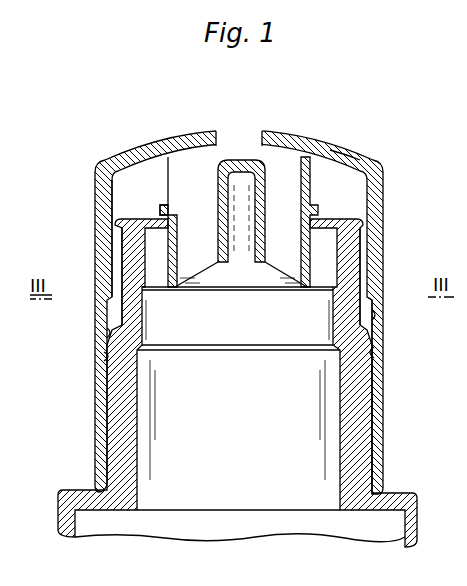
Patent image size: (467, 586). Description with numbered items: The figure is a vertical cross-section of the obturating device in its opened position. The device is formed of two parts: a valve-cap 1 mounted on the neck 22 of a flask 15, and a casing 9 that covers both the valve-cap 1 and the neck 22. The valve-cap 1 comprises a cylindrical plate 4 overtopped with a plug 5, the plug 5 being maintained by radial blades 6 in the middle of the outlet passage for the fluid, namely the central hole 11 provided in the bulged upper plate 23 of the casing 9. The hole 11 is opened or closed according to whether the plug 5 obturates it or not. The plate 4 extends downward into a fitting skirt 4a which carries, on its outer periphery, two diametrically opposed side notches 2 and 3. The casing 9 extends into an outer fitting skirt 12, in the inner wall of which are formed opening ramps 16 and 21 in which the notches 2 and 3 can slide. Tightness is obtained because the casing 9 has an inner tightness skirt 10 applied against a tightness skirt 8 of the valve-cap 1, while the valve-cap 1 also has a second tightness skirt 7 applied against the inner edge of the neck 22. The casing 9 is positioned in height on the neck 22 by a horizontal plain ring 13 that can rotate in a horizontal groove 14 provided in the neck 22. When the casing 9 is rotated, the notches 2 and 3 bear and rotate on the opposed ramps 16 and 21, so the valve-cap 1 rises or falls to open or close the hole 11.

The valve-cap 1 is at (97, 222).
The side notch 2 is at (372, 303).
The side notch 3 is at (100, 292).
The cylindrical plate 4 is at (370, 198).
The fitting skirt 4a is at (112, 250).
The plug 5 is at (308, 172).
The radial blades 6 is at (282, 266).
The second tightness skirt 7 is at (153, 212).
The tightness skirt 8 is at (162, 208).
The casing 9 is at (347, 155).
The inner tightness skirt 10 is at (316, 163).
The central hole 11 is at (243, 143).
The outer fitting skirt 12 is at (378, 412).
The horizontal plain ring 13 is at (368, 351).
The groove 14 is at (105, 364).
The flask 15 is at (117, 428).
The opening ramp 16 is at (378, 314).
The opening ramp 21 is at (100, 307).
The neck 22 is at (348, 267).
The upper plate 23 is at (190, 134).